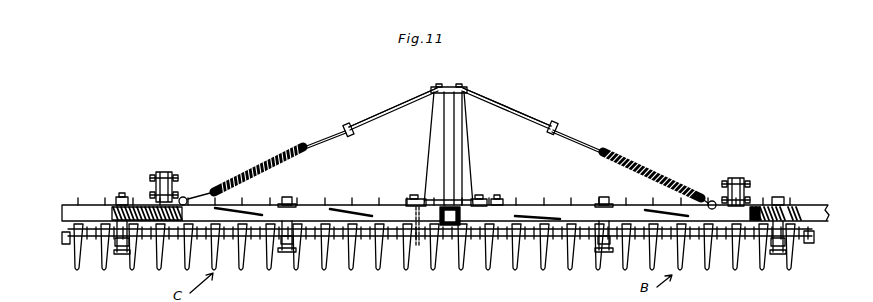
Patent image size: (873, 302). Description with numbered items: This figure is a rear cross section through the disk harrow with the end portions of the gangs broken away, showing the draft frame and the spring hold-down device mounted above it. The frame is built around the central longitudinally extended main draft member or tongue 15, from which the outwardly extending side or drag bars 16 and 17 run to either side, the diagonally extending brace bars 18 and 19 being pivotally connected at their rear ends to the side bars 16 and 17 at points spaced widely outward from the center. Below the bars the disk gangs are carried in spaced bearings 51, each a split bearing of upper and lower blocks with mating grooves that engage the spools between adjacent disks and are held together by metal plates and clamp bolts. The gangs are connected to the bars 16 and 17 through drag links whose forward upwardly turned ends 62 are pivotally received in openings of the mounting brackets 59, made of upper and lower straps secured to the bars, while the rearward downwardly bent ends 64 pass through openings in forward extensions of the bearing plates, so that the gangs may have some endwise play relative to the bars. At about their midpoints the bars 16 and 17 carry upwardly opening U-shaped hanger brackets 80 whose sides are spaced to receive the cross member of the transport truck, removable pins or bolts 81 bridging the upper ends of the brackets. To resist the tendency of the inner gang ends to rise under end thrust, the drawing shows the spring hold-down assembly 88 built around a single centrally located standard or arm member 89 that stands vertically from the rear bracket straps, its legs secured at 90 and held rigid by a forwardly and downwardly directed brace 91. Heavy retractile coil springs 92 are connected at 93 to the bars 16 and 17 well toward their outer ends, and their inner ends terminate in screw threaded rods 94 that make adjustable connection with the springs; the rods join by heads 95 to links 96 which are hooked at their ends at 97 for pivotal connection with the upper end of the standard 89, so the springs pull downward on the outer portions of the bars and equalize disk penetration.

The main draft member or tongue 15 is at (472, 197).
The side or drag bar 16 is at (806, 213).
The side or drag bar 17 is at (88, 204).
The brace bar 18 is at (758, 207).
The brace bar 19 is at (140, 203).
The bearing 51 is at (127, 259).
The mounting bracket 59 is at (120, 203).
The upwardly turned end of drag link 62 is at (296, 205).
The downwardly bent end of drag link 64 is at (270, 258).
The hanger bracket 80 is at (174, 186).
The pin or bolt 81 is at (164, 172).
The lifting frame 88 is at (510, 95).
The standard or arm member 89 is at (424, 149).
The leg securement 90 is at (416, 198).
The brace 91 is at (456, 150).
The retractile coil spring 92 is at (250, 175).
The spring connection 93 is at (186, 198).
The screw threaded rod 94 is at (314, 138).
The head 95 is at (346, 124).
The link 96 is at (400, 106).
The hook 97 is at (446, 98).